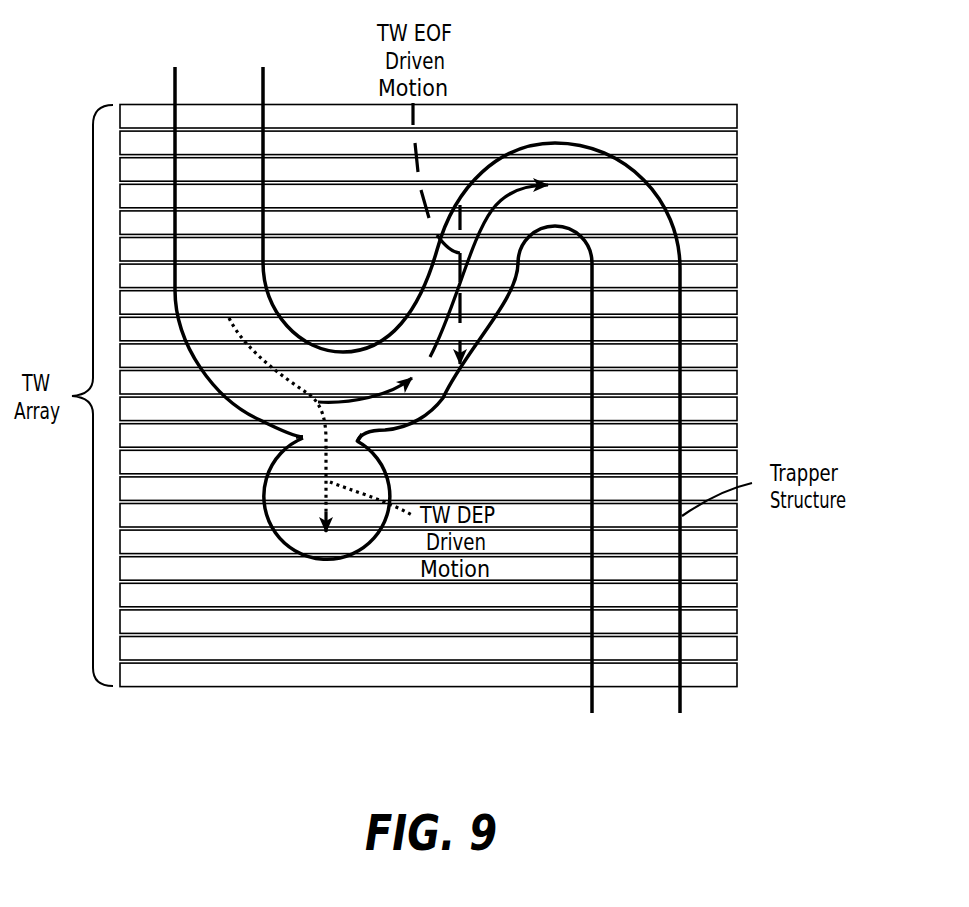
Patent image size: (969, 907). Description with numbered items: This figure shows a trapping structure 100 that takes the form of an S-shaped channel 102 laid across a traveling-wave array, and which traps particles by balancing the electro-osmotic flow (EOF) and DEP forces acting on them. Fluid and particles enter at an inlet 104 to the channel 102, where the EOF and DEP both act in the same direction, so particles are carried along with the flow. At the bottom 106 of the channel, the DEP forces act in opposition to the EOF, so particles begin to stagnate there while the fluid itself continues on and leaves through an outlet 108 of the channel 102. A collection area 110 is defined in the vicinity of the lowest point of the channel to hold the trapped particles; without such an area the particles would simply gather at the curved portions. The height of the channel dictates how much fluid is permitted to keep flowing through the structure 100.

The trapping structure 100 is at (688, 84).
The S-shaped channel 102 is at (263, 252).
The inlet 104 is at (220, 86).
The bottom of the channel 106 is at (300, 437).
The outlet 108 is at (638, 700).
The collection area 110 is at (322, 561).